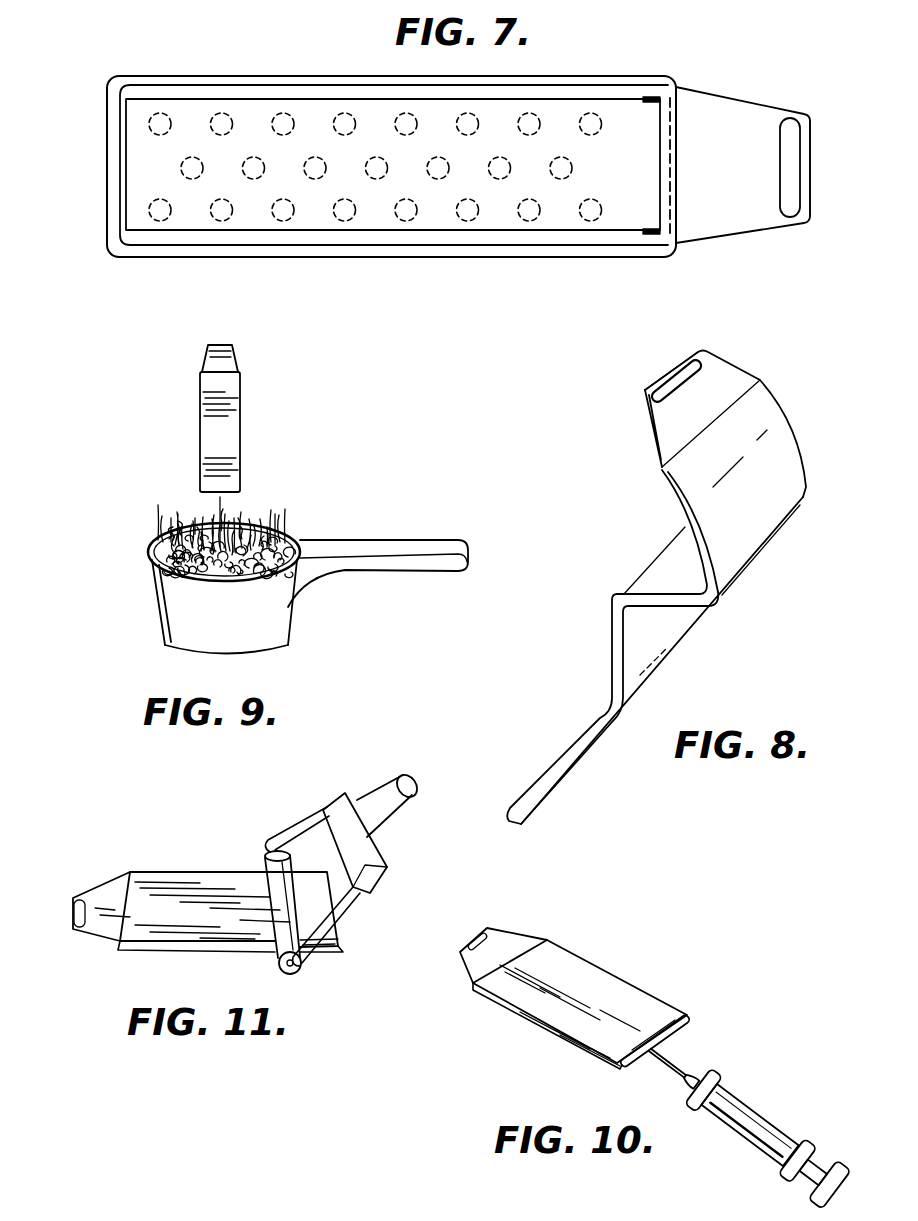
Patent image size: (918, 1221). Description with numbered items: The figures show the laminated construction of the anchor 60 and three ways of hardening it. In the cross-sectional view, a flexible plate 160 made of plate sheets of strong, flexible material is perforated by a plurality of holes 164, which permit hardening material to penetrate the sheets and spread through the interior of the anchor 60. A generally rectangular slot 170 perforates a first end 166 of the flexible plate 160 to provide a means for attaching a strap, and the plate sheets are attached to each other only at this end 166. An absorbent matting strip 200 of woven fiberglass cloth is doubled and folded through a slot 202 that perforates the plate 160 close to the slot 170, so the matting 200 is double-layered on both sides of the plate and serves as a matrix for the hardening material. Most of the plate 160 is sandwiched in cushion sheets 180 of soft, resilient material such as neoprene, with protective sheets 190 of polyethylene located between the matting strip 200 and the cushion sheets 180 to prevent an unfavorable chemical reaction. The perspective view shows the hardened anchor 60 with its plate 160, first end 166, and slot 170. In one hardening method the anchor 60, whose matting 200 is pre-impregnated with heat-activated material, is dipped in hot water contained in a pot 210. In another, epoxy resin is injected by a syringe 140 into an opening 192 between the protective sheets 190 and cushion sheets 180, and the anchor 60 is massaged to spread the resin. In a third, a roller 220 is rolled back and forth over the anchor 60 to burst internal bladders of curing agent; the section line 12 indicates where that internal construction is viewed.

In FIG. 11, the section line 12- 12 is at (67, 910).
In FIG. 7, the anchor 60 is at (794, 97).
In FIG. 9, the anchor 60 is at (245, 428).
In FIG. 8, the anchor 60 is at (789, 415).
In FIG. 11, the anchor 60 is at (199, 864).
In FIG. 10, the anchor 60 is at (578, 968).
In FIG. 10, the syringe 140 is at (764, 1127).
In FIG. 7, the flexible plate 160 is at (743, 118).
In FIG. 8, the flexible plate 160 is at (727, 380).
In FIG. 7, the holes 164 is at (598, 118).
In FIG. 7, the first end 166 is at (812, 180).
In FIG. 8, the first end 166 is at (678, 350).
In FIG. 7, the slot 170 is at (793, 147).
In FIG. 8, the slot 170 is at (680, 376).
In FIG. 7, the cushion sheets 180 is at (527, 258).
In FIG. 7, the protective sheets 190 is at (393, 258).
In FIG. 10, the opening 192 is at (687, 1017).
In FIG. 7, the matting strip 200 is at (638, 122).
In FIG. 7, the slot 202 is at (648, 233).
In FIG. 9, the pot 210 is at (272, 628).
In FIG. 11, the roller 220 is at (341, 812).